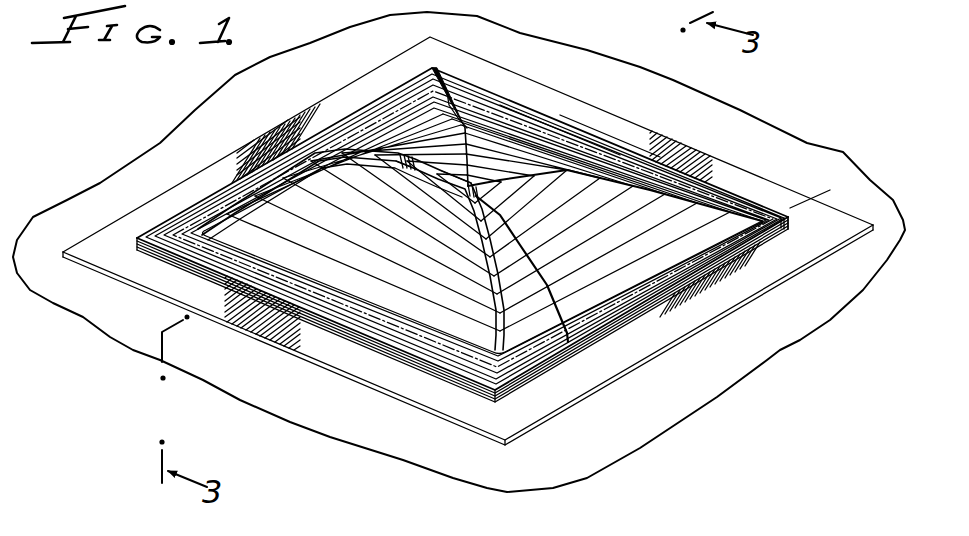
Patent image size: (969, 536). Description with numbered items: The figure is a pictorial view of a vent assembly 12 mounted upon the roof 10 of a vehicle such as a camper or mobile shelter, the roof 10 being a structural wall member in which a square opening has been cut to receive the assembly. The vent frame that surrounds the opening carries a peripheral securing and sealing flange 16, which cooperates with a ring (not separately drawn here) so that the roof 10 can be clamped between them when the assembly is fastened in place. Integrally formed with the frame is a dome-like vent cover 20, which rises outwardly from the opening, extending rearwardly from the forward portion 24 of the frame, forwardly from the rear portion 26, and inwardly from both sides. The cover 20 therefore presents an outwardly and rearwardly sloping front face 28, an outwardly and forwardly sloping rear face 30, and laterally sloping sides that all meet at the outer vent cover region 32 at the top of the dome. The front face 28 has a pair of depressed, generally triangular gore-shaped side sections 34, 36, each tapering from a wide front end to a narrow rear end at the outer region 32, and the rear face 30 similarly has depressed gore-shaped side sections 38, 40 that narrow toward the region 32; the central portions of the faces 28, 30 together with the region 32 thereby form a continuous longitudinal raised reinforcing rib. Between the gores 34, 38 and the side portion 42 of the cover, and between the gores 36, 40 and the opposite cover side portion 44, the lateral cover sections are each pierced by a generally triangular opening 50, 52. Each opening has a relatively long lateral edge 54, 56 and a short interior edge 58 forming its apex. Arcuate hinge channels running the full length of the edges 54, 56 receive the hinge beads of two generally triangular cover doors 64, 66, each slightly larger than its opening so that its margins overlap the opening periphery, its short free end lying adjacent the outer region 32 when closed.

The roof 10 is at (400, 447).
The vent assembly 12 is at (230, 143).
The peripheral securing and sealing flange 16 is at (813, 207).
The vent cover 20 is at (407, 333).
The forward portion of the vent frame 24 is at (753, 353).
The rear portion of the vent frame 26 is at (175, 185).
The front face 28 is at (622, 283).
The rear face 30 is at (347, 132).
The outer vent cover region 32 is at (433, 173).
The depressed side section 34 is at (536, 315).
The depressed side section 36 is at (718, 238).
The depressed side section 38 is at (250, 184).
The depressed side section 40 is at (408, 95).
The side portion of the cover 42 is at (223, 262).
The cover side portion 44 is at (573, 150).
The triangular opening 50 is at (480, 242).
The triangular opening 52 is at (452, 85).
The long lateral edge 54 is at (307, 275).
The long lateral edge 56 is at (533, 117).
The short interior edge 58 is at (453, 157).
The cover door 64 is at (363, 283).
The cover door 66 is at (605, 135).